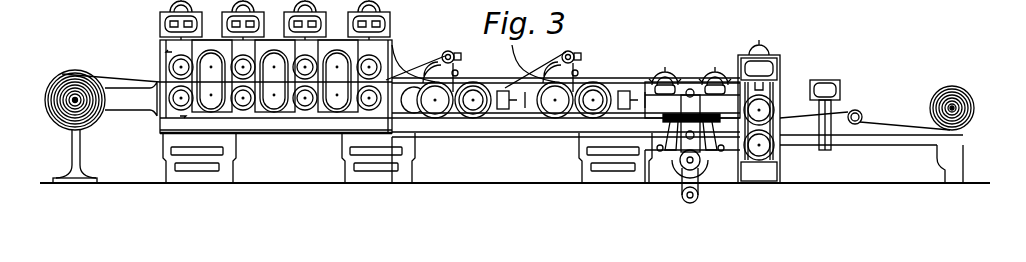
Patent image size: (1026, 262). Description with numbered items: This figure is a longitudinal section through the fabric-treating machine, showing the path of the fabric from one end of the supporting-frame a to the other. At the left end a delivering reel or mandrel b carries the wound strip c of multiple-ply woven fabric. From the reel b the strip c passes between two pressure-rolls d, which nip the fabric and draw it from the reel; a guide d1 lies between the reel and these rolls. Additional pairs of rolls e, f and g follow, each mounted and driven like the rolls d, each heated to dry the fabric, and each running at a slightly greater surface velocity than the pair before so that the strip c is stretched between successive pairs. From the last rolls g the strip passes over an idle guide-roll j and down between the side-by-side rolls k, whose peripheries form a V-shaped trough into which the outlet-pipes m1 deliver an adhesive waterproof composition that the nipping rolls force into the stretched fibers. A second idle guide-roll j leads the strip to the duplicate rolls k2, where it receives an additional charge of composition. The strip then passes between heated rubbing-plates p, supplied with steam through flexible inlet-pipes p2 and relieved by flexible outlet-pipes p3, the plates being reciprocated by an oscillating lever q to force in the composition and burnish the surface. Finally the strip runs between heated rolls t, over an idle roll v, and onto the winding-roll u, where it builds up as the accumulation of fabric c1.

The supporting-frame a is at (300, 136).
The delivering reel or mandrel b is at (73, 97).
The strip of fabric c is at (107, 70).
The accumulation of fabric c1 is at (975, 109).
The pressure-rolls d is at (169, 66).
The feed guide plate d1 is at (160, 107).
The pair of rolls e is at (236, 57).
The pair of rolls f is at (298, 57).
The pair of rolls g is at (360, 57).
The idle guide-roll j is at (448, 51).
The outlet-pipes m1 is at (459, 74).
The rolls k is at (435, 119).
The second pair of rolls k2 is at (583, 114).
The heated rubbing-plates p is at (662, 119).
The lever q is at (688, 152).
The flexible inlet-pipes p2 is at (693, 201).
The flexible outlet-pipes p3 is at (700, 186).
The pair of rolls t is at (777, 96).
The winding-roll u is at (955, 106).
The idle roll v is at (862, 121).